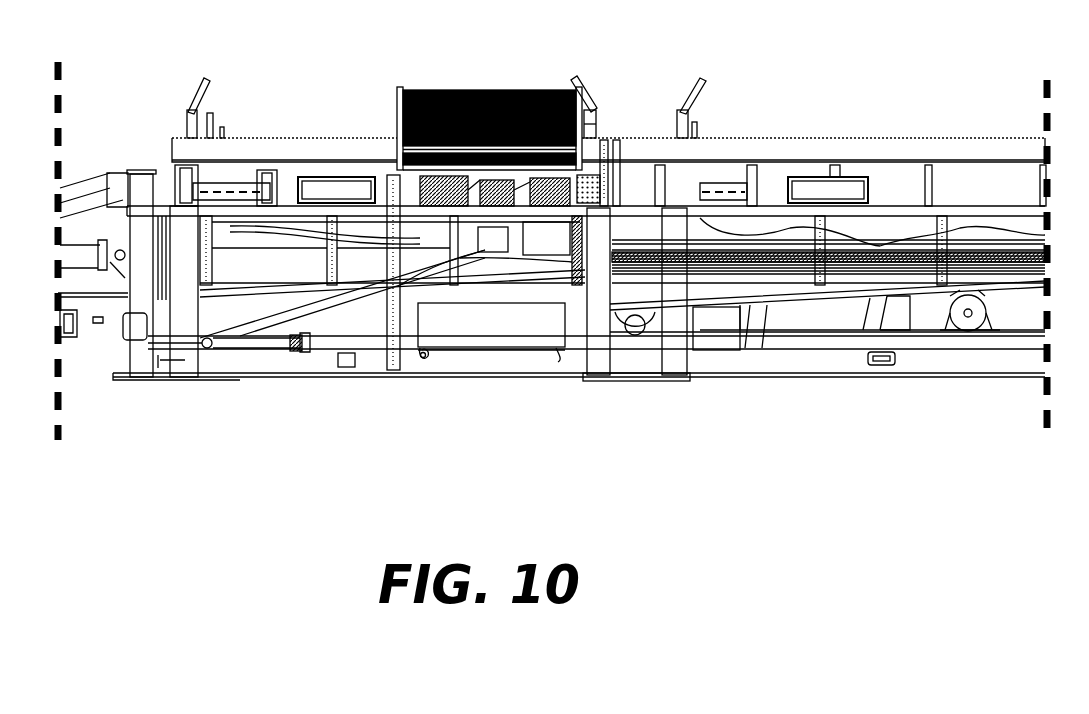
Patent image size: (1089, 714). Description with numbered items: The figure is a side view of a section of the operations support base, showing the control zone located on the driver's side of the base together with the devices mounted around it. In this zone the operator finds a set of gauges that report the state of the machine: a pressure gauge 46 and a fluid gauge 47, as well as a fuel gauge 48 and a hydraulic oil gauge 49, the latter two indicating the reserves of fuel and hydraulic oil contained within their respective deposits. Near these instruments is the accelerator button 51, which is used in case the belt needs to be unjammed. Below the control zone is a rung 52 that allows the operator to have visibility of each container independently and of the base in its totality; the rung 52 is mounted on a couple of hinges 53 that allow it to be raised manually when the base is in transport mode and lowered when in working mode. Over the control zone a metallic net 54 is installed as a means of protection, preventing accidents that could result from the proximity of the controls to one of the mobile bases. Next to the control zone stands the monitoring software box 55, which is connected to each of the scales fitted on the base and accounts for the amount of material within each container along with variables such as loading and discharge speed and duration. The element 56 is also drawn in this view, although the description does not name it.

The pressure gauge 46 is at (596, 137).
The fluid gauge 47 is at (600, 172).
The fuel gauge 48 is at (613, 193).
The hydraulic oil gauge 49 is at (626, 190).
The accelerator button 51 is at (560, 350).
The rung 52 is at (395, 366).
The hinges 53 is at (423, 357).
The metallic net 54 is at (432, 84).
The monitoring software box 55 is at (612, 377).
The junction box 56 is at (352, 176).